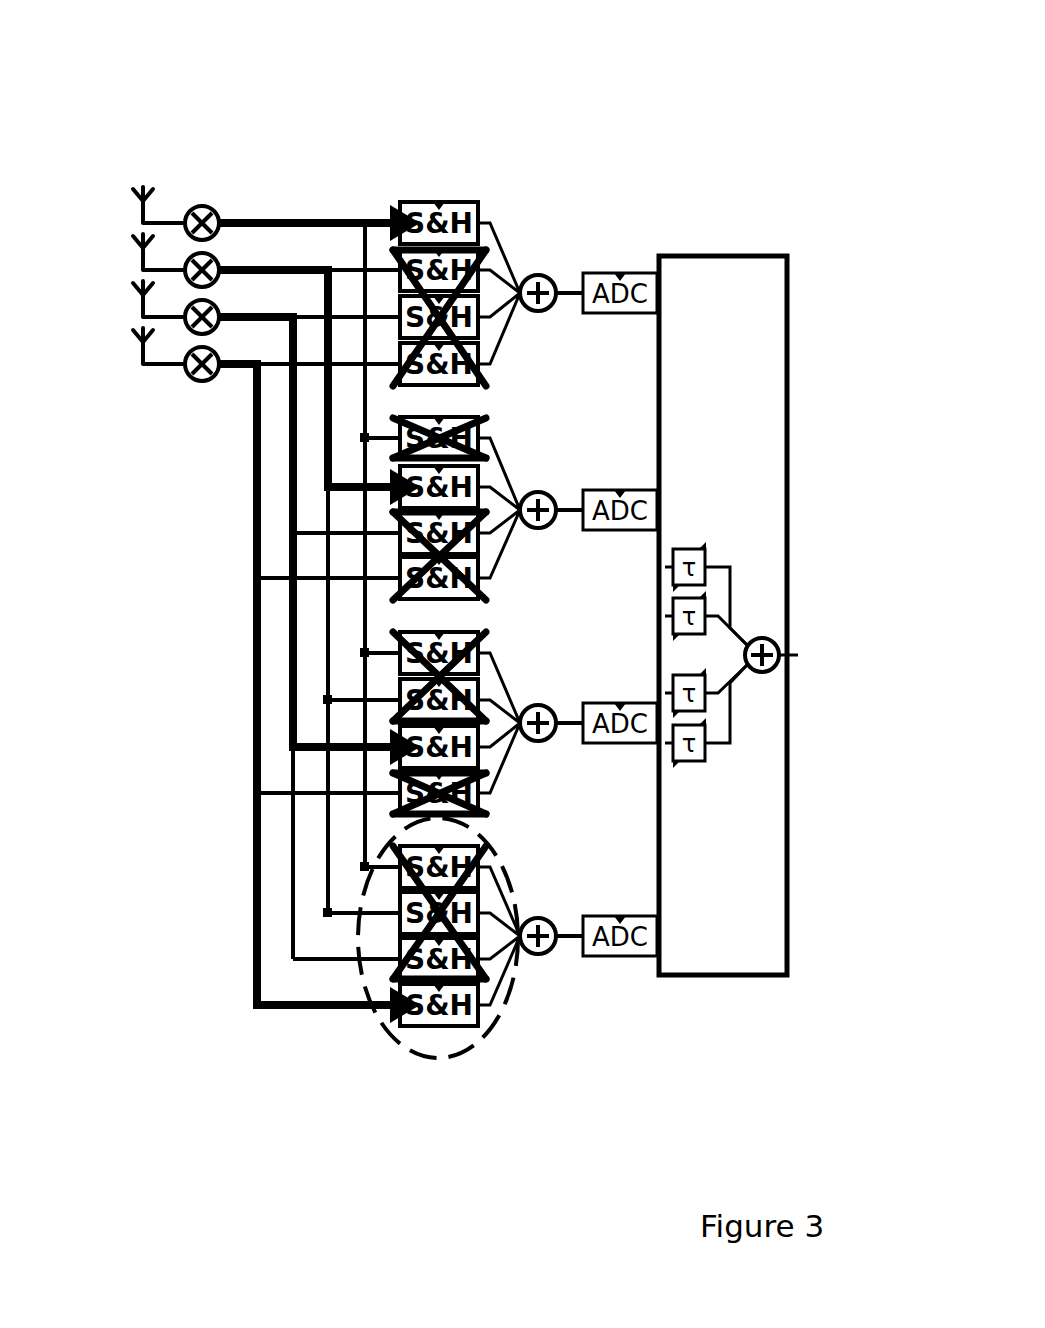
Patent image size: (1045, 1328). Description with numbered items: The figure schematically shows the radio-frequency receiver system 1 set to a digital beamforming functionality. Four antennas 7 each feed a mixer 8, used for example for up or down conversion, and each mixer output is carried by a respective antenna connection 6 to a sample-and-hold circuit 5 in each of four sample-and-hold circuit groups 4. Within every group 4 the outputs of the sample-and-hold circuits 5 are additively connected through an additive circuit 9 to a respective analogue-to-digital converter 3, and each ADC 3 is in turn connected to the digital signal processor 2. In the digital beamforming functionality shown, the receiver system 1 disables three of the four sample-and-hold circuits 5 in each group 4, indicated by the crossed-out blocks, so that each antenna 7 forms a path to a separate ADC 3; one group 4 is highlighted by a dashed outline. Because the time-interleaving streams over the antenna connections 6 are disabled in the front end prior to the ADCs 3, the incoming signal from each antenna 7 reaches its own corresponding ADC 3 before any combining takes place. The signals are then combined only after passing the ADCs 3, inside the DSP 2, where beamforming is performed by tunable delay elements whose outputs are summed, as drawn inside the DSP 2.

The receiver system 1 is at (680, 165).
The digital signal processor 2 is at (697, 977).
The analogue-to-digital converter 3 is at (612, 958).
The sample-and-hold circuit group 4 is at (382, 1050).
The sample-and-hold circuit 5 is at (472, 1023).
The antenna connection 6 is at (277, 220).
The antenna 7 is at (142, 345).
The mixer 8 is at (190, 382).
The additive circuit 9 is at (512, 290).